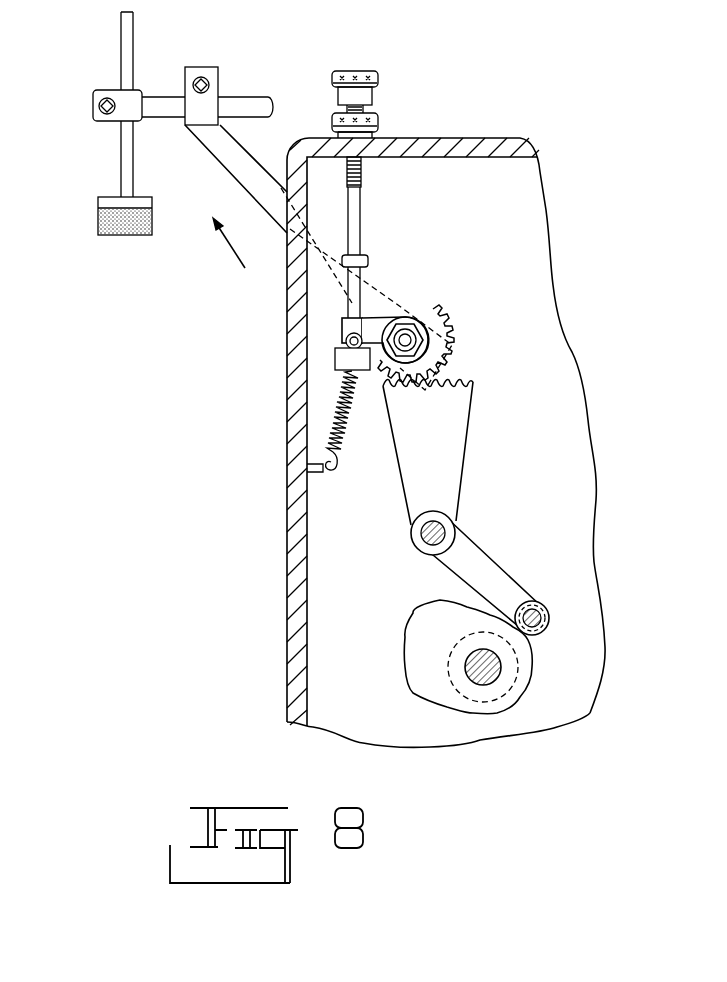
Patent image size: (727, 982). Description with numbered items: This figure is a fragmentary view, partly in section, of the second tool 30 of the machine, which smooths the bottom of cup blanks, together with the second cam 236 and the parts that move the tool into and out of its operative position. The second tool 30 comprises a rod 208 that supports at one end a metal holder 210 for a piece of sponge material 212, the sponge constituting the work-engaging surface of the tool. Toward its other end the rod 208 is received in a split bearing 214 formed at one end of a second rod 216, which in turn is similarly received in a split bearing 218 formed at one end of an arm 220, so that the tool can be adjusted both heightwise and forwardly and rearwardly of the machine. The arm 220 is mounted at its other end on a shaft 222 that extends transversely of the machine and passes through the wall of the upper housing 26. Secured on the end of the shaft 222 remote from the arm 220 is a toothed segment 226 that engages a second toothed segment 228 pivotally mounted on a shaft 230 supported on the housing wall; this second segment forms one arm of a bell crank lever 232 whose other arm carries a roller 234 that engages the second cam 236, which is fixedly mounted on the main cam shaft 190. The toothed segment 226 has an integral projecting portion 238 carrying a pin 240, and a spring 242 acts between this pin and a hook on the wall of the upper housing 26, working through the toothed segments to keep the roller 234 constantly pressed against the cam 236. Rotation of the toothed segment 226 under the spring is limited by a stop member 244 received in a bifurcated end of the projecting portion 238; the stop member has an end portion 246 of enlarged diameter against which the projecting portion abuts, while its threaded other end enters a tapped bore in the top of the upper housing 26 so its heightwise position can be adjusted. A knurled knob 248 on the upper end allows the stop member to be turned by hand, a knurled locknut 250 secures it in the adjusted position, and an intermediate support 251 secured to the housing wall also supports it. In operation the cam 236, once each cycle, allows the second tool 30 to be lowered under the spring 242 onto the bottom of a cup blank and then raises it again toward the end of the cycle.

The upper housing 26 is at (287, 620).
The second tool 30 is at (229, 249).
The main cam shaft 190 is at (499, 668).
The rod 208 is at (121, 172).
The metal holder 210 is at (150, 202).
The piece of sponge material 212 is at (152, 227).
The split bearing 214 is at (116, 92).
The second rod 216 is at (175, 108).
The split bearing 218 is at (212, 83).
The arm 220 is at (283, 226).
The shaft 222 is at (408, 336).
The toothed segment 226 is at (436, 347).
The second toothed segment 228 is at (448, 458).
The shaft 230 is at (425, 537).
The bell crank lever 232 is at (484, 567).
The roller 234 is at (550, 620).
The second cam 236 is at (415, 634).
The projecting portion 238 is at (344, 320).
The pin 240 is at (346, 341).
The spring 242 is at (346, 420).
The stop member 244 is at (356, 281).
The end portion of enlarged diameter 246 is at (336, 356).
The knurled knob 248 is at (380, 81).
The knurled locknut 250 is at (380, 122).
The intermediate support 251 is at (367, 262).